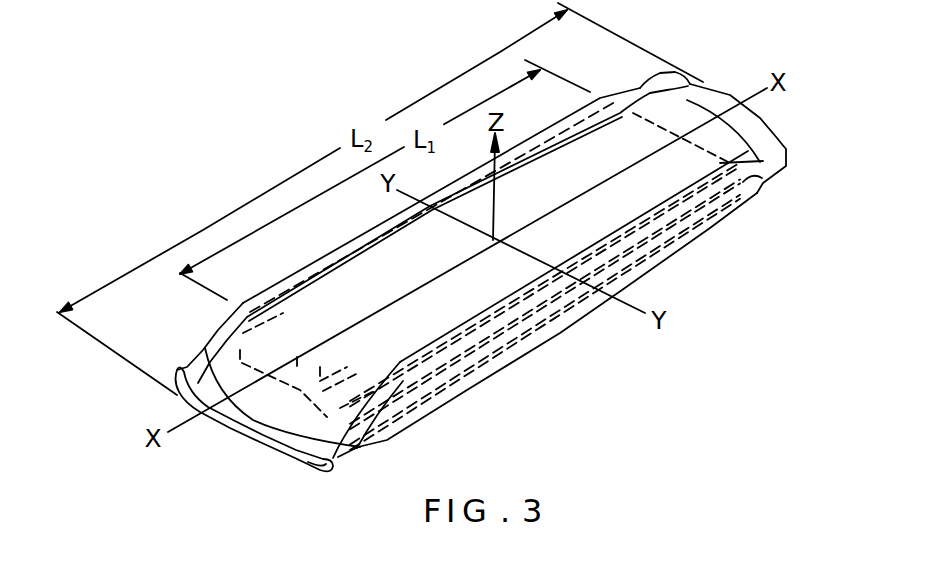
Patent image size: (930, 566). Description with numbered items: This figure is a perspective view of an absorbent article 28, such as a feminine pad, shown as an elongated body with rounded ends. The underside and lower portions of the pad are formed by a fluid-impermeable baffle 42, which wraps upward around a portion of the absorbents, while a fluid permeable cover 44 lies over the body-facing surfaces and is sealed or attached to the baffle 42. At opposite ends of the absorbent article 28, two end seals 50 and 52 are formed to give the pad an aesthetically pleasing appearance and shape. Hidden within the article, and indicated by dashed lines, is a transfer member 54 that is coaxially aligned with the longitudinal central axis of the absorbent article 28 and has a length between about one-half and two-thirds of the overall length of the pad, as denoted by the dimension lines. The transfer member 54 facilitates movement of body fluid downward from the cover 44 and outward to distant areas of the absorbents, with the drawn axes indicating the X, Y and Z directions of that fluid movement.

The absorbent article 28 is at (262, 93).
The fluid-impermeable baffle 42 is at (690, 240).
The fluid permeable cover 44 is at (698, 113).
The end seal 50 is at (273, 440).
The end seal 52 is at (760, 132).
The transfer member 54 is at (519, 308).